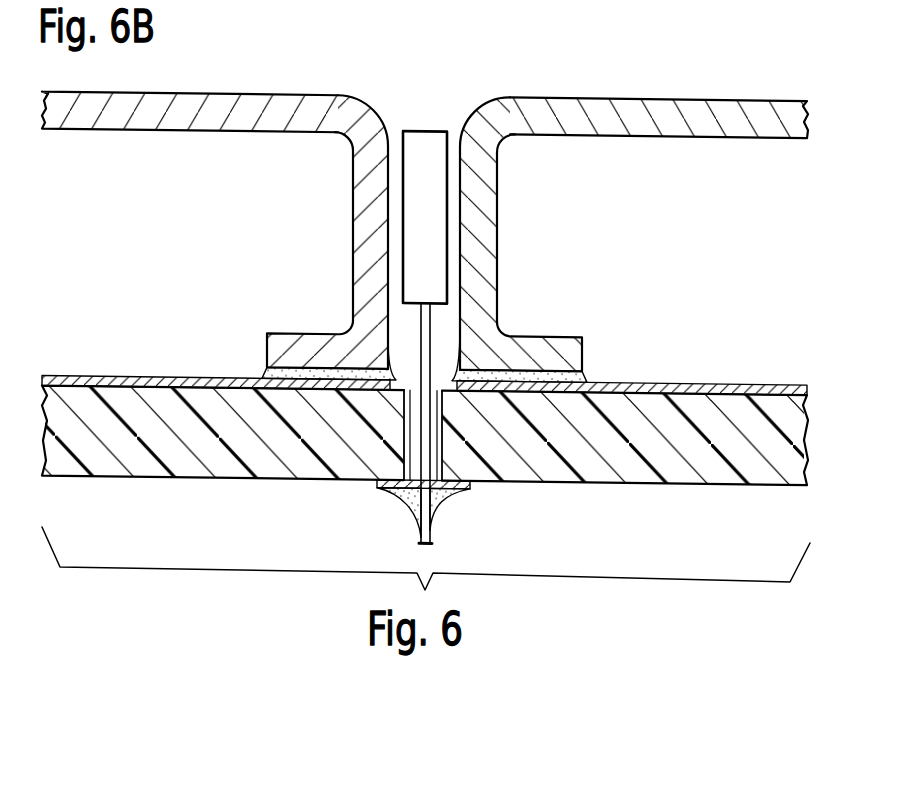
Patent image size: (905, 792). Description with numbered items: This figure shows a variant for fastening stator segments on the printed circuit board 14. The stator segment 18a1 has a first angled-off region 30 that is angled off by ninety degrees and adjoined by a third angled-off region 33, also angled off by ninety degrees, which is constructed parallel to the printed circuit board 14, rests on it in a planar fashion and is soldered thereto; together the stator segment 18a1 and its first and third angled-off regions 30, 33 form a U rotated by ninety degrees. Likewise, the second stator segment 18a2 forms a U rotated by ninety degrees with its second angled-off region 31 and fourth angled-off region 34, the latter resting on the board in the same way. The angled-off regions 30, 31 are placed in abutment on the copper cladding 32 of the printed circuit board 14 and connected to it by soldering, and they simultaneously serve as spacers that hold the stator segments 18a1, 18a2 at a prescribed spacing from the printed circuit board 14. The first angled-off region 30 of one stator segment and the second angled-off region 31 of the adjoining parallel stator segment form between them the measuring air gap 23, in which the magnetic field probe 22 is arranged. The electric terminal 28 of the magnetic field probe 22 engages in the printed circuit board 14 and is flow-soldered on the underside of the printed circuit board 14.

The printed circuit board 14 is at (78, 397).
The stator segment 18a1 is at (773, 118).
The second stator segment 18a2 is at (70, 119).
The magnetic field probe 22 is at (433, 134).
The measuring air gap 23 is at (393, 124).
The electric terminal 28 is at (431, 525).
The first angled-off region 30 is at (490, 194).
The second angled-off region 31 is at (365, 190).
The copper cladding 32 is at (752, 377).
The third angled-off region 33 is at (563, 341).
The fourth angled-off region 34 is at (287, 341).